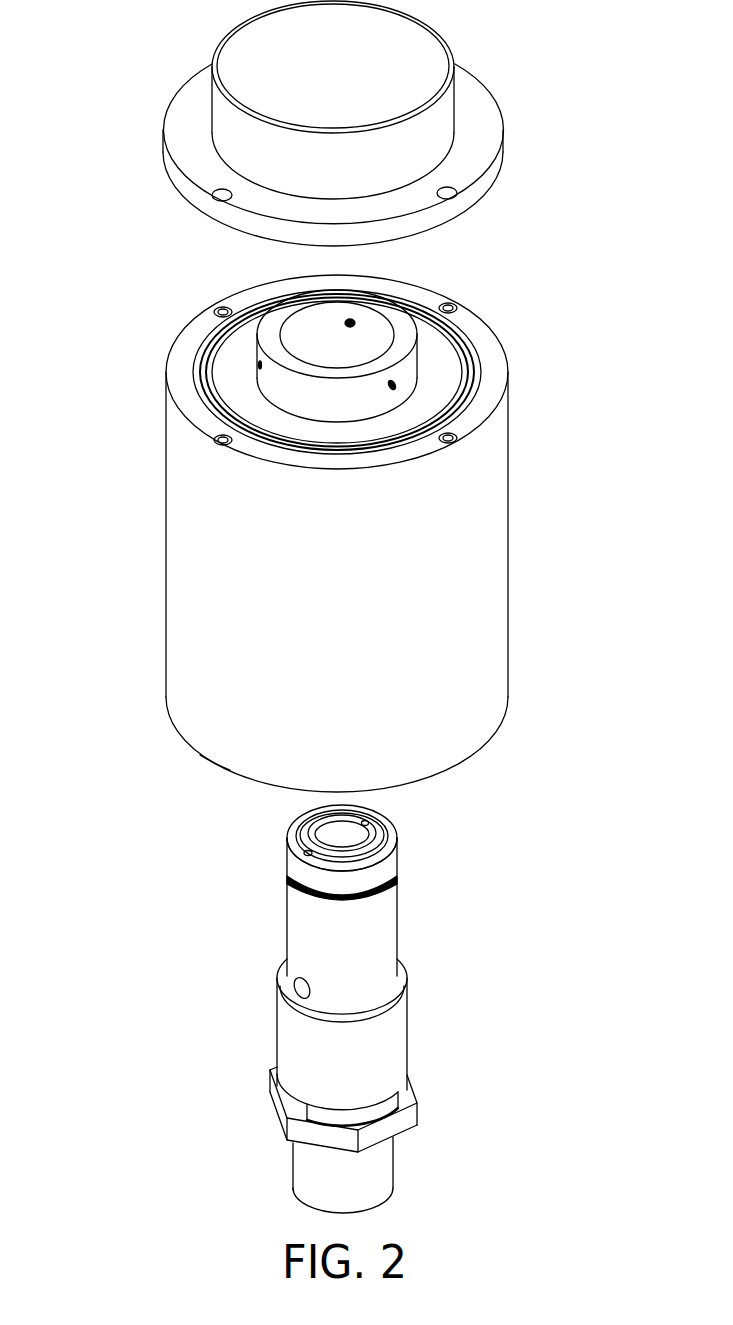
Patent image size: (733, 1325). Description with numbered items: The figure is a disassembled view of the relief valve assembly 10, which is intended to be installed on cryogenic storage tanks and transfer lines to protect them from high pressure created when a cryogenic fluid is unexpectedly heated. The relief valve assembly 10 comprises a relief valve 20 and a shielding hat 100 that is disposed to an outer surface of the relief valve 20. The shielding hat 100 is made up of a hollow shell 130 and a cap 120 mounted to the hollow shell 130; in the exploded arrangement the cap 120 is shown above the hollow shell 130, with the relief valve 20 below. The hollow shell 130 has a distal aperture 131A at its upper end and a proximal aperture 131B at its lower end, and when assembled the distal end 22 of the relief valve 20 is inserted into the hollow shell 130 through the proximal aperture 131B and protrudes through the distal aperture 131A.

The relief valve assembly 10 is at (56, 28).
The shielding hat 100 is at (575, 107).
The cap 120 is at (492, 125).
The hollow shell 130 is at (495, 468).
The distal aperture 131A is at (310, 330).
The proximal aperture 131B is at (200, 755).
The relief valve 20 is at (398, 1040).
The distal end 22 is at (405, 857).